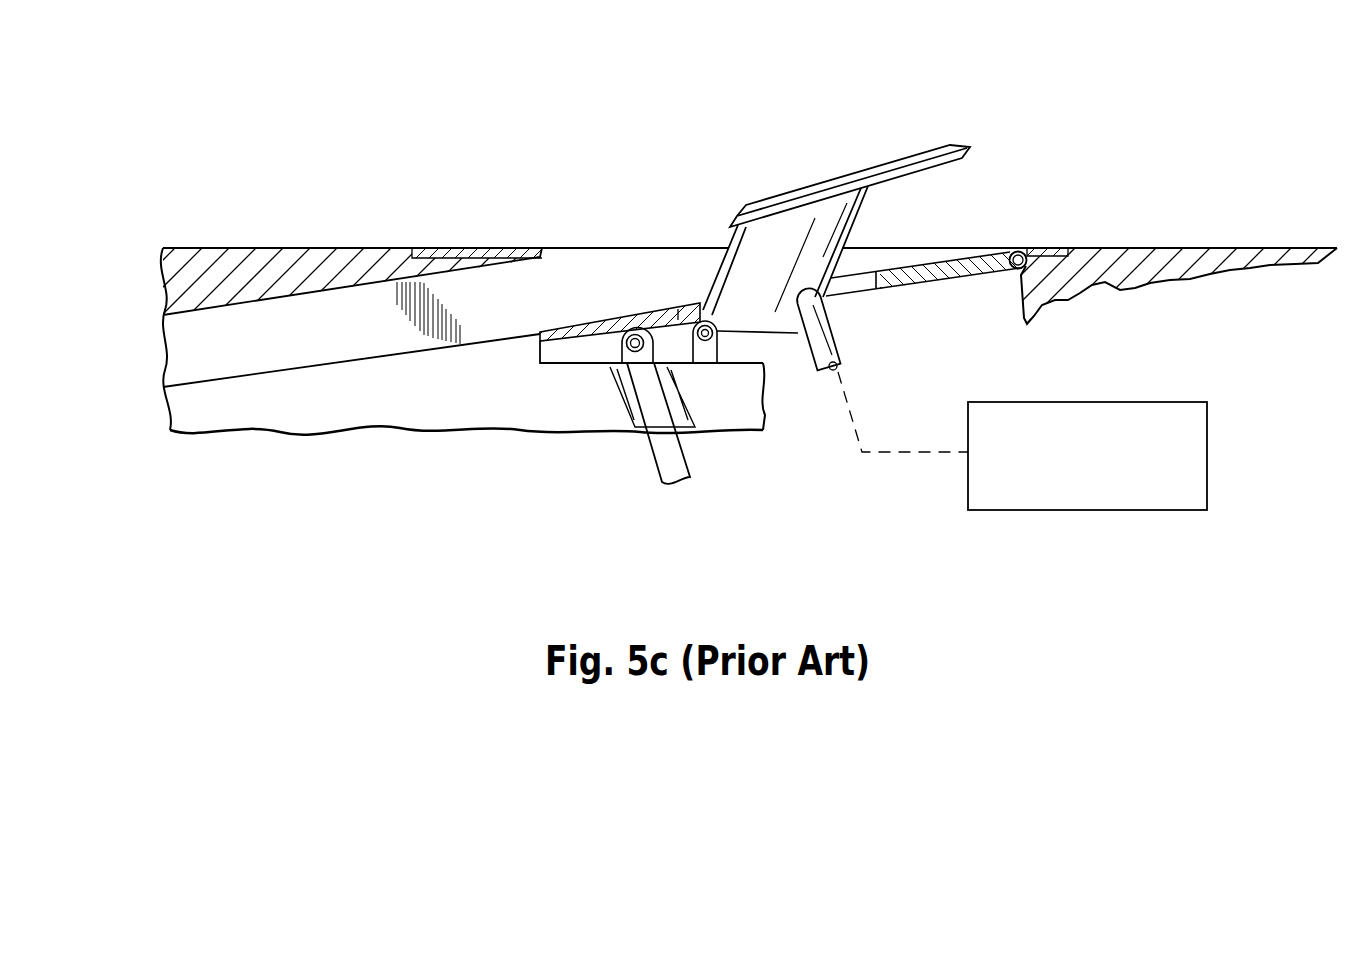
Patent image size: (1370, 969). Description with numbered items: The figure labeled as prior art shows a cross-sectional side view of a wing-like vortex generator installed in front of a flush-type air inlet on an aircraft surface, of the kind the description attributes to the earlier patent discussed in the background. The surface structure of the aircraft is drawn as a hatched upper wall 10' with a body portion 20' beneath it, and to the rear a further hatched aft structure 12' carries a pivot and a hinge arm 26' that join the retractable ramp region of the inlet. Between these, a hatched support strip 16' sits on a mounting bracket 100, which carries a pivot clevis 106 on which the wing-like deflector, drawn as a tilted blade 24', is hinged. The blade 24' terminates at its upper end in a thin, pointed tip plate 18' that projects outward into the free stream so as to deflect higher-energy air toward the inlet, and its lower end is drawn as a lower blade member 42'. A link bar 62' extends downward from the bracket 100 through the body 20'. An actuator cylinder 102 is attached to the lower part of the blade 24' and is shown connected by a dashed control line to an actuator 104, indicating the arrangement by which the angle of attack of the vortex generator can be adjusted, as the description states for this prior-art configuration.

The upper wall / hatched wedge 10' is at (371, 228).
The aft structure / slab 12' is at (1144, 255).
The hinge support strip 16' is at (623, 263).
The blade tip plate 18' is at (850, 137).
The body 20' is at (749, 341).
The blade 24' is at (836, 250).
The hinge arm 26' is at (1054, 279).
The lower blade member 42' is at (773, 416).
The link bar 62' is at (631, 427).
The mounting bracket 100 is at (718, 330).
The actuator cylinder 102 is at (840, 335).
The actuator 104 is at (1207, 457).
The pivot clevis 106 is at (701, 320).